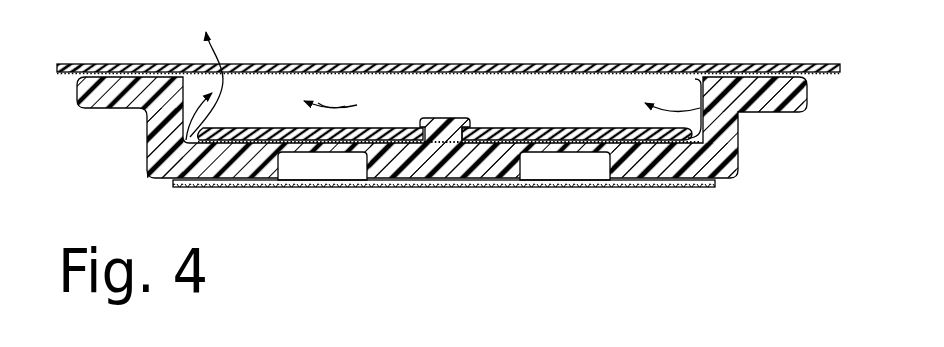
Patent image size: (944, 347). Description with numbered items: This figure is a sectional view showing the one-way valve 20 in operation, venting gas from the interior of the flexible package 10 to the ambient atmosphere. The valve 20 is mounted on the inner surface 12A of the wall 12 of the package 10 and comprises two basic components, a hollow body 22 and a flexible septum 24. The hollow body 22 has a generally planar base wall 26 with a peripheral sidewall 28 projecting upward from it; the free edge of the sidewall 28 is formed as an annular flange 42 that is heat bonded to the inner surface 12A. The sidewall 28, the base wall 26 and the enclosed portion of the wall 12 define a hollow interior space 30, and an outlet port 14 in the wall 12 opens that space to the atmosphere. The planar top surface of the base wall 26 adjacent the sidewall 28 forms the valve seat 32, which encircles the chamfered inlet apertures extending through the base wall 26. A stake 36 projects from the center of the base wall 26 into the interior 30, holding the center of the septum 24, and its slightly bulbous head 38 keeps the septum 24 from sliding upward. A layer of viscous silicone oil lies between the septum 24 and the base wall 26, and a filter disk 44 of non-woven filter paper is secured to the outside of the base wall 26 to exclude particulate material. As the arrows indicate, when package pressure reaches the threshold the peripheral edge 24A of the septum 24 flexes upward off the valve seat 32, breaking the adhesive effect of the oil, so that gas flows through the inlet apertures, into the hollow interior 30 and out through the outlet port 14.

The flexible package 10 is at (399, 65).
The wall 12 is at (436, 70).
The inner surface 12A is at (74, 76).
The outlet port 14 is at (231, 89).
The one-way valve 20 is at (744, 143).
The hollow body 22 is at (725, 106).
The septum 24 is at (510, 126).
The peripheral edge 24A is at (707, 82).
The base wall 26 is at (682, 163).
The peripheral sidewall 28 is at (167, 128).
The hollow interior space 30 is at (623, 96).
The valve seat 32 is at (645, 155).
The stake 36 is at (440, 142).
The bulbous head 38 is at (448, 125).
The annular flange 42 is at (755, 98).
The filter disk 44 is at (175, 183).